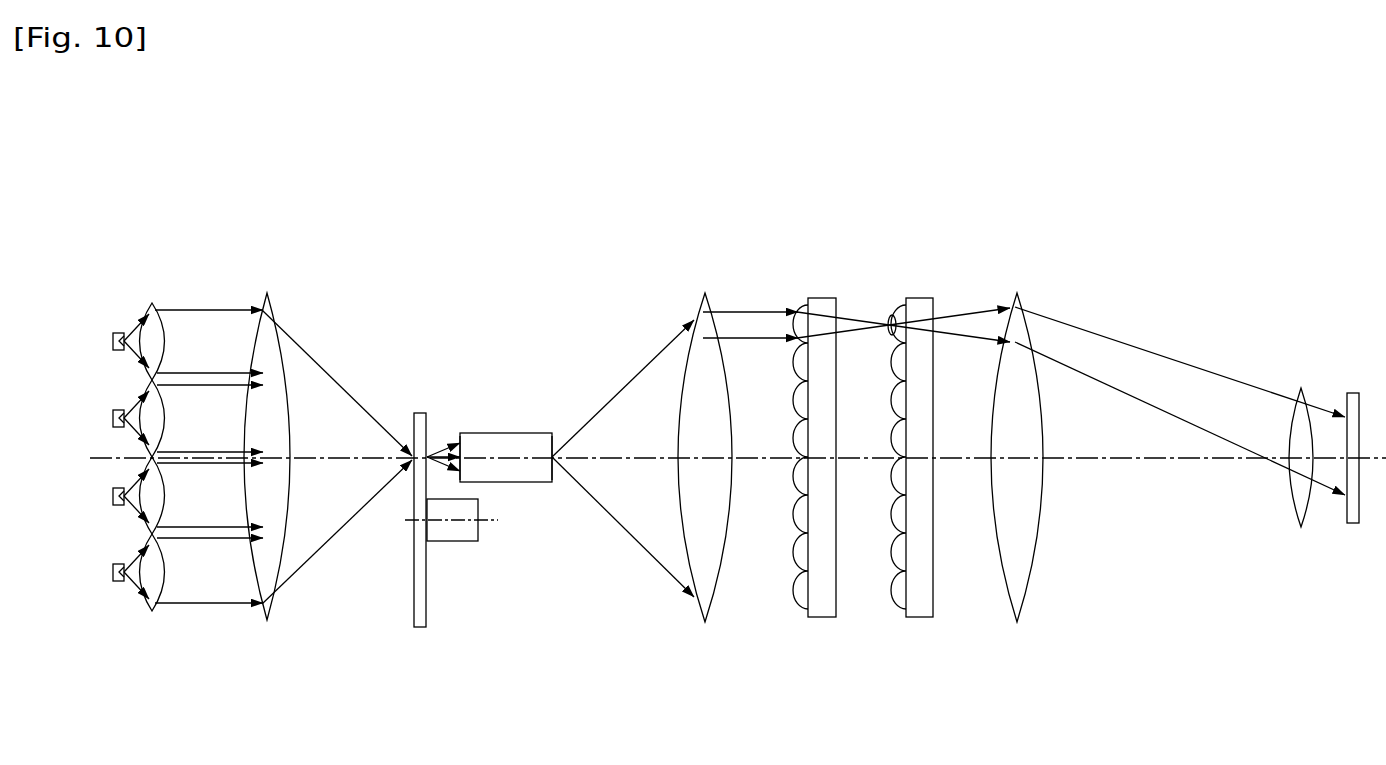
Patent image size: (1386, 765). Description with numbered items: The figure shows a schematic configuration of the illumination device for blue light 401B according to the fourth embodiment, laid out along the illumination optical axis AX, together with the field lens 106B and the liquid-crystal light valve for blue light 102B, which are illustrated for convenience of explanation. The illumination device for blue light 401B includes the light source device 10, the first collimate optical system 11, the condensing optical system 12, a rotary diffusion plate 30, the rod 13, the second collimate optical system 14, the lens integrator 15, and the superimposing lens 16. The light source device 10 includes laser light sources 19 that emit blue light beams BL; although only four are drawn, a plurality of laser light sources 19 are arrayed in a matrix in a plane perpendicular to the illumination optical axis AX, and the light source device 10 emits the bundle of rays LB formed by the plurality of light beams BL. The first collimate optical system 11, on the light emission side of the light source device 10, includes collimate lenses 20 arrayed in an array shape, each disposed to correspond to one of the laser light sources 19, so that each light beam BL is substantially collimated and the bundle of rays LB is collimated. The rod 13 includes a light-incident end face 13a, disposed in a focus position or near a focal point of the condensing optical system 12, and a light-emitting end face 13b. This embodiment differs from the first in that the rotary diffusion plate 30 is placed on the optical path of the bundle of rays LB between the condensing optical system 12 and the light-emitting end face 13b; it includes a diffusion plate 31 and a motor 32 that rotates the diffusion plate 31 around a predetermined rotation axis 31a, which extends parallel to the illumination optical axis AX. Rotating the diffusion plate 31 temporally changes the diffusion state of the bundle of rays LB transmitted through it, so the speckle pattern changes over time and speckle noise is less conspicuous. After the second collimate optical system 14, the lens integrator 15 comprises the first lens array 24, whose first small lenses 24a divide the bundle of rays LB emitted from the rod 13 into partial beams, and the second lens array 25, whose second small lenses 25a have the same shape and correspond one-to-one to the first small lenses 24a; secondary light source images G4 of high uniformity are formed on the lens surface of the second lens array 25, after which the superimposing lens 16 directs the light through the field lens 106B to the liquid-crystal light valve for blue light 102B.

The light source device 10 is at (111, 488).
The laser light source 19 is at (117, 333).
The first collimate optical system 11 is at (163, 479).
The collimate lens 20 is at (160, 323).
The light beam BL is at (130, 321).
The bundle of rays LB is at (197, 610).
The condensing optical system 12 is at (270, 622).
The rotary diffusion plate 30 is at (461, 533).
The diffusion plate 31 is at (418, 411).
The rotation axis 31a is at (495, 525).
The motor 32 is at (465, 541).
The rod 13 is at (560, 452).
The light-incident end face 13a is at (460, 437).
The light-emitting end face 13b is at (565, 437).
The second collimate optical system 14 is at (707, 625).
The lens integrator 15 is at (901, 484).
The first lens array 24 is at (814, 463).
The first small lens 24a is at (806, 308).
The second lens array 25 is at (911, 463).
The second small lens 25a is at (900, 306).
The secondary light source image G4 is at (888, 317).
The superimposing lens 16 is at (1017, 625).
The field lens 106B is at (1303, 528).
The liquid-crystal light valve for blue light 102B is at (1355, 524).
The illumination device for blue light 401B is at (1218, 226).
The illumination optical axis AX is at (1174, 462).